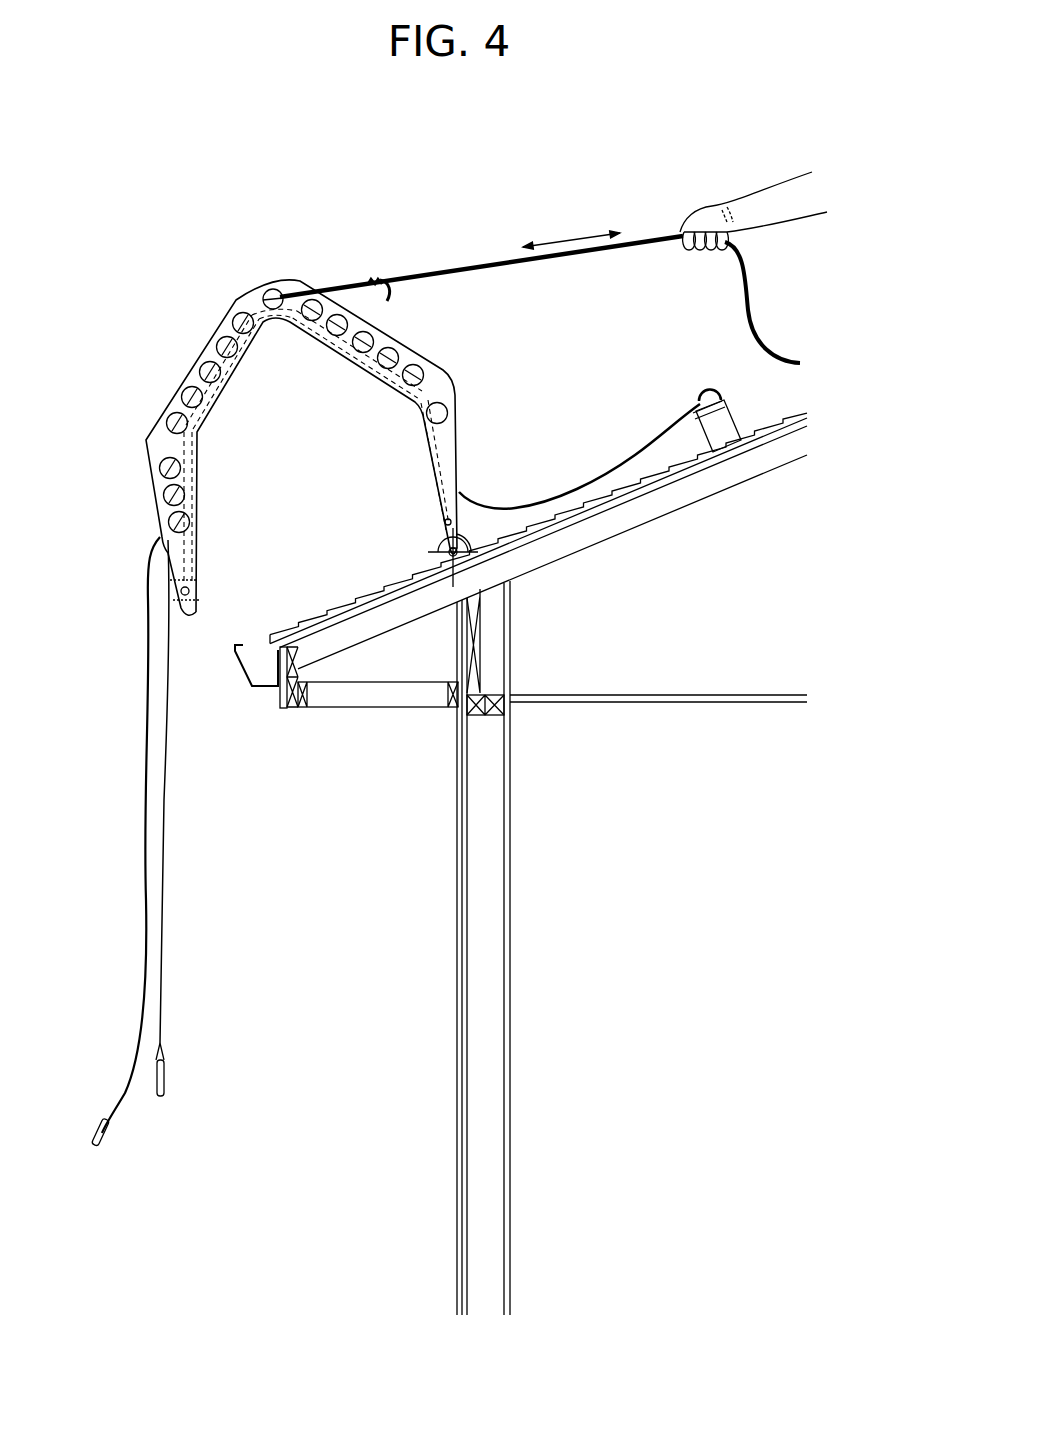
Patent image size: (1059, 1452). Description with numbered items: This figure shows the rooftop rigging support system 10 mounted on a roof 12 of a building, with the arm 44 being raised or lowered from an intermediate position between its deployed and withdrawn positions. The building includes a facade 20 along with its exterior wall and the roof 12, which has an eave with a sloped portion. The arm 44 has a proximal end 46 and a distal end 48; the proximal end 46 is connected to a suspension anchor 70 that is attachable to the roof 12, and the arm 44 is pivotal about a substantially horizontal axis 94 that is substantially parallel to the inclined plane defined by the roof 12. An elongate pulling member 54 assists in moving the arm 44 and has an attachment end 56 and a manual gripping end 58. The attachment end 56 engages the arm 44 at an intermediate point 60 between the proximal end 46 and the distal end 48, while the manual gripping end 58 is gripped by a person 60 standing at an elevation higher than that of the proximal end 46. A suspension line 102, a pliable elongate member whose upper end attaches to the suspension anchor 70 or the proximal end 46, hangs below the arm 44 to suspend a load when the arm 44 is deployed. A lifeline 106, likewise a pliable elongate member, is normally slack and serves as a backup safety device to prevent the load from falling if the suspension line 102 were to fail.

The rooftop rigging support system 10 is at (160, 216).
The roof 12 is at (760, 434).
The facade 20 is at (210, 352).
The arm 44 is at (429, 357).
The proximal end 46 is at (415, 535).
The distal end 48 is at (217, 587).
The elongate pulling member 54 is at (450, 268).
The attachment end 56 is at (291, 289).
The manual gripping end 58 is at (676, 247).
The intermediate point / person 60 is at (761, 197).
The suspension anchor 70 is at (473, 546).
The substantially horizontal axis 94 is at (450, 553).
The suspension line 102 is at (444, 499).
The lifeline 106 is at (597, 485).